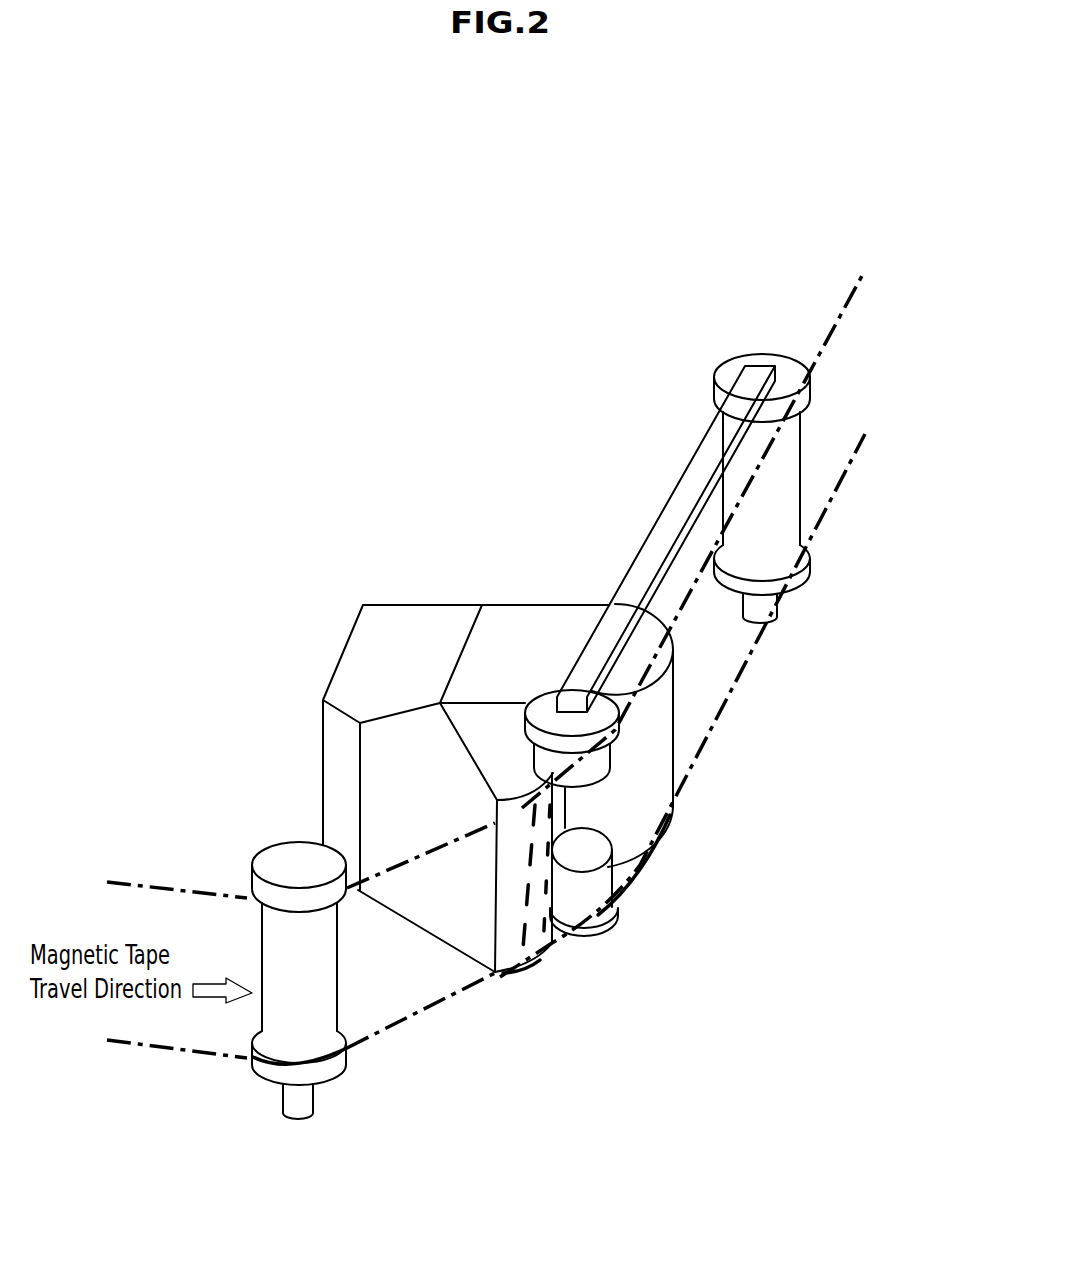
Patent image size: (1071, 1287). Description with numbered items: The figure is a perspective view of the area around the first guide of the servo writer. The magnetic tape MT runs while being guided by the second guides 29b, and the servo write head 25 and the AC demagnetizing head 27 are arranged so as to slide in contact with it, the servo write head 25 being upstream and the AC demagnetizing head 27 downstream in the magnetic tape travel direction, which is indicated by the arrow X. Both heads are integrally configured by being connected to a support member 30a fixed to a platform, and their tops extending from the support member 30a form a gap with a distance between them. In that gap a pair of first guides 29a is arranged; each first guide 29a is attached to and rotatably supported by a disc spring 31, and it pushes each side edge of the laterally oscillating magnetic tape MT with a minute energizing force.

The servo write head 25 is at (523, 775).
The AC demagnetizing head 27 is at (502, 612).
The first guide 29a is at (617, 697).
The second guide 29b is at (743, 353).
The support member 30a is at (358, 655).
The disc spring 31 is at (646, 573).
The magnetic tape MT is at (460, 990).
The direction X is at (772, 819).